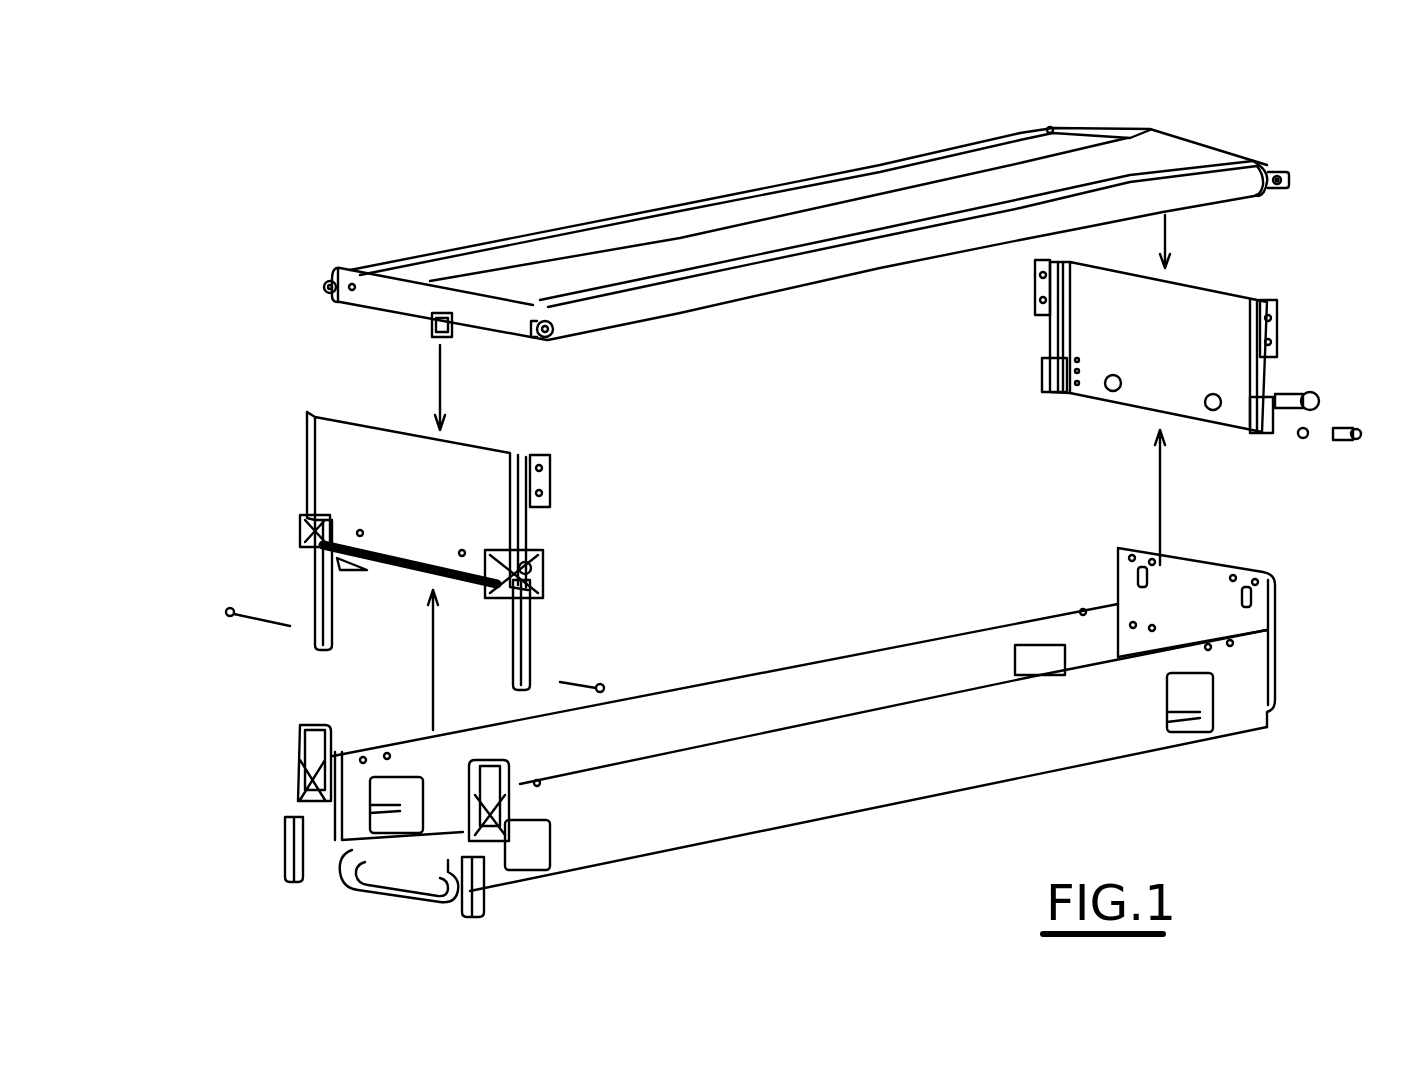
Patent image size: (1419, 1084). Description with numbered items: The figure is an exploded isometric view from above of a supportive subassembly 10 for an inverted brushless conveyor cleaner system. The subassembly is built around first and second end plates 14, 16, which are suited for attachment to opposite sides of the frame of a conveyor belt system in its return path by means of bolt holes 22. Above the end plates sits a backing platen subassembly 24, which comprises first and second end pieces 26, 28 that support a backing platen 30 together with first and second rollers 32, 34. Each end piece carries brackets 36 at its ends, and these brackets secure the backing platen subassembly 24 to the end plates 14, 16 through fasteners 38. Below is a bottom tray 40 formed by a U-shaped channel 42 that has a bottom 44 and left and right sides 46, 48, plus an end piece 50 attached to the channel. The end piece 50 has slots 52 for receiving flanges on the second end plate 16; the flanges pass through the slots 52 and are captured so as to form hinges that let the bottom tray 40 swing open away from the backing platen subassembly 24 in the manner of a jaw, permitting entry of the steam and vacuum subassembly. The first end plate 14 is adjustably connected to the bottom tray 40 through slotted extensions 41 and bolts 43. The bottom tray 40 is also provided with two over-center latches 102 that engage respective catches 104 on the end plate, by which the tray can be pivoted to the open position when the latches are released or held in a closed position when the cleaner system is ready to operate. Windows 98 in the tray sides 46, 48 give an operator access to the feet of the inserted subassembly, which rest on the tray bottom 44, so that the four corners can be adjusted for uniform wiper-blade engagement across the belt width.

The supportive subassembly 10 is at (477, 187).
The first end plate 14 is at (767, 476).
The second end plate 16 is at (1228, 290).
The bolt holes 22 is at (308, 447).
The backing platen subassembly 24 is at (793, 221).
The first end piece 26 is at (398, 305).
The second end piece 28 is at (1090, 128).
The backing platen 30 is at (727, 222).
The first roller 32 is at (815, 176).
The second roller 34 is at (945, 235).
The brackets 36 is at (322, 285).
The fasteners 38 is at (300, 515).
The bottom tray 40 is at (725, 722).
The slotted extensions 41 is at (305, 578).
The U-shaped channel 42 is at (756, 692).
The bolts 43 is at (232, 618).
The bottom 44 is at (448, 848).
The left side 46 is at (973, 640).
The right side 48 is at (998, 712).
The end piece 50 is at (1196, 603).
The slots 52 is at (1240, 597).
The windows 98 is at (385, 802).
The over-center latches 102 is at (290, 838).
The catches 104 is at (300, 540).